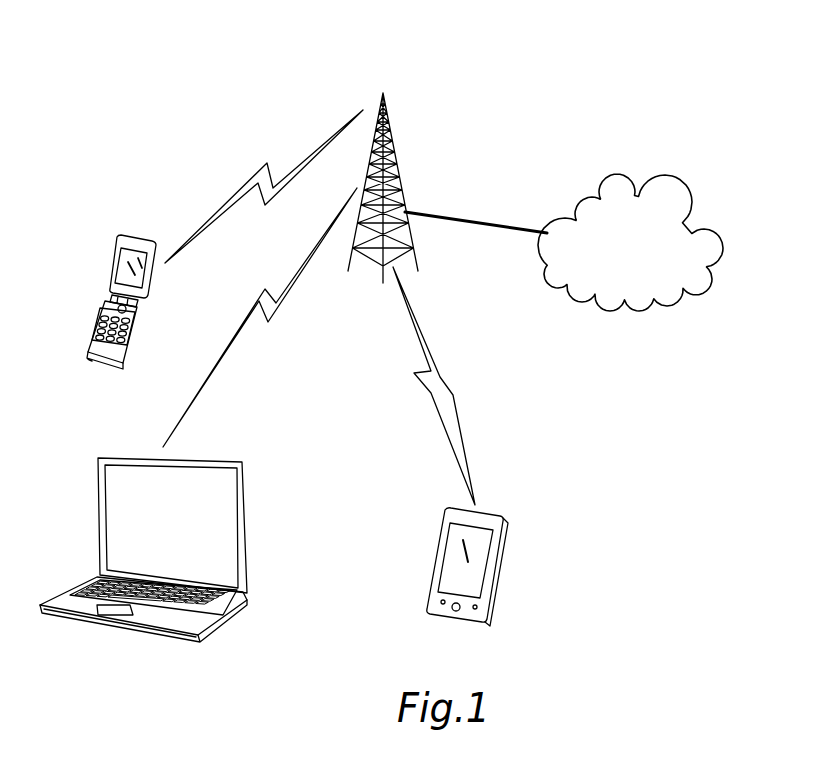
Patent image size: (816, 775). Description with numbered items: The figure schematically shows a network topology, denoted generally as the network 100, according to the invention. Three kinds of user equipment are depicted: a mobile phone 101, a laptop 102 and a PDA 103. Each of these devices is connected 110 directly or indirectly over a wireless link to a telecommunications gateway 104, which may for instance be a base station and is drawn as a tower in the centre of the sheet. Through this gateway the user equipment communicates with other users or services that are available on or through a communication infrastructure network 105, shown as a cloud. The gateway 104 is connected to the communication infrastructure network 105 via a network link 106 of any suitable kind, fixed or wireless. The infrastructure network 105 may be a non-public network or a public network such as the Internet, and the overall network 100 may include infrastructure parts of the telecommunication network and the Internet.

The network 100 is at (198, 74).
The mobile phone 101 is at (117, 280).
The laptop 102 is at (120, 512).
The PDA 103 is at (500, 565).
The telecommunications gateway 104 is at (393, 142).
The communication infrastructure network 105 is at (637, 289).
The network link 106 is at (473, 222).
The wireless link connection 110 is at (278, 190).